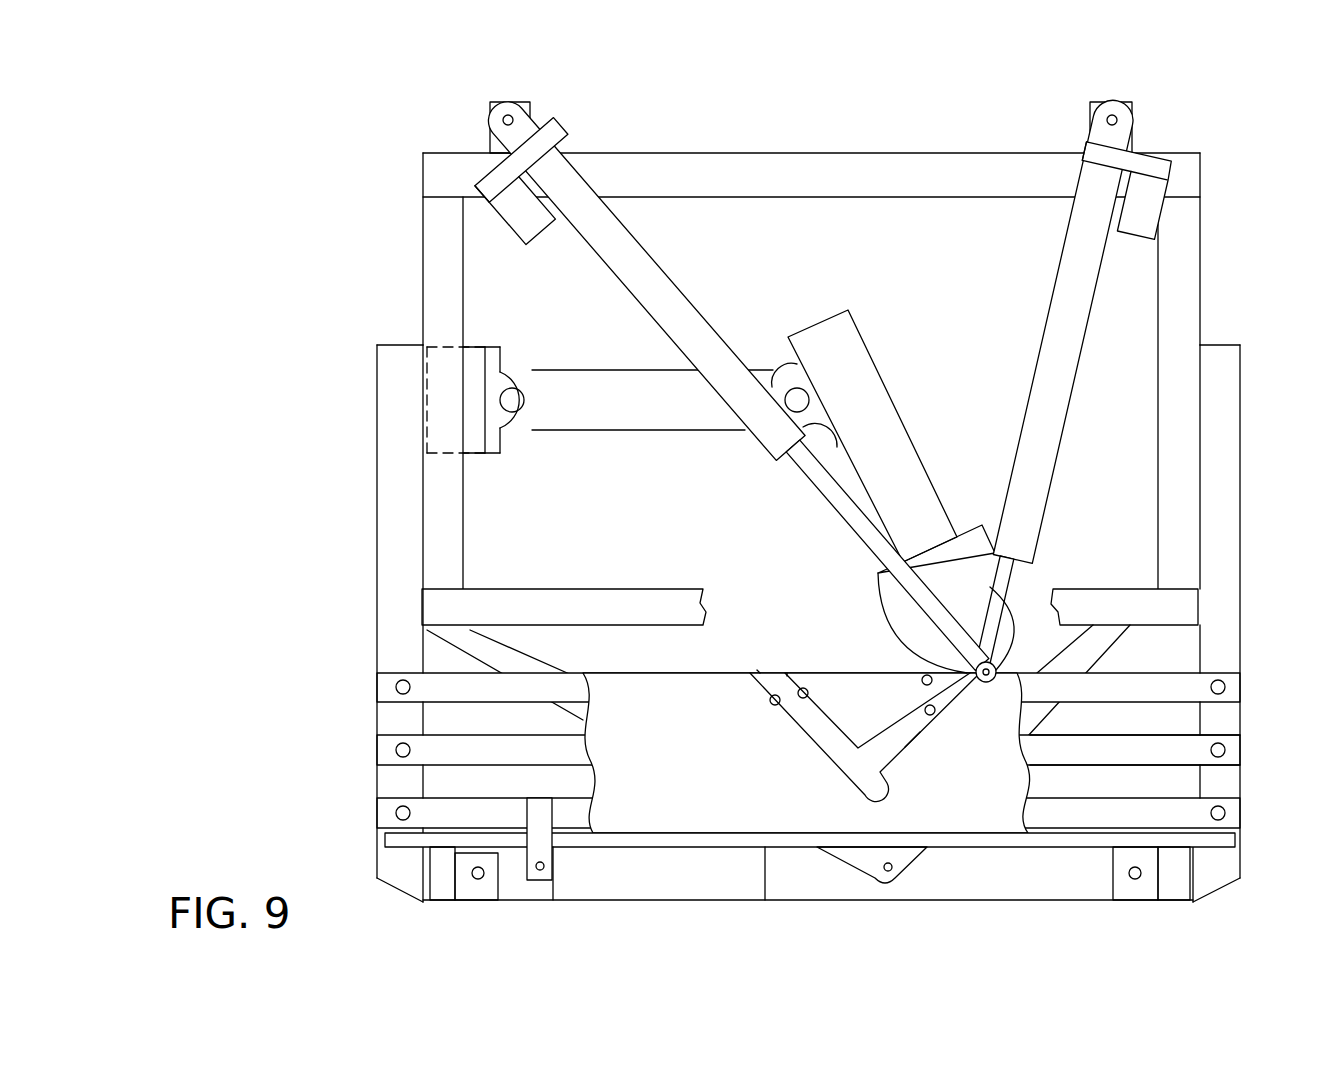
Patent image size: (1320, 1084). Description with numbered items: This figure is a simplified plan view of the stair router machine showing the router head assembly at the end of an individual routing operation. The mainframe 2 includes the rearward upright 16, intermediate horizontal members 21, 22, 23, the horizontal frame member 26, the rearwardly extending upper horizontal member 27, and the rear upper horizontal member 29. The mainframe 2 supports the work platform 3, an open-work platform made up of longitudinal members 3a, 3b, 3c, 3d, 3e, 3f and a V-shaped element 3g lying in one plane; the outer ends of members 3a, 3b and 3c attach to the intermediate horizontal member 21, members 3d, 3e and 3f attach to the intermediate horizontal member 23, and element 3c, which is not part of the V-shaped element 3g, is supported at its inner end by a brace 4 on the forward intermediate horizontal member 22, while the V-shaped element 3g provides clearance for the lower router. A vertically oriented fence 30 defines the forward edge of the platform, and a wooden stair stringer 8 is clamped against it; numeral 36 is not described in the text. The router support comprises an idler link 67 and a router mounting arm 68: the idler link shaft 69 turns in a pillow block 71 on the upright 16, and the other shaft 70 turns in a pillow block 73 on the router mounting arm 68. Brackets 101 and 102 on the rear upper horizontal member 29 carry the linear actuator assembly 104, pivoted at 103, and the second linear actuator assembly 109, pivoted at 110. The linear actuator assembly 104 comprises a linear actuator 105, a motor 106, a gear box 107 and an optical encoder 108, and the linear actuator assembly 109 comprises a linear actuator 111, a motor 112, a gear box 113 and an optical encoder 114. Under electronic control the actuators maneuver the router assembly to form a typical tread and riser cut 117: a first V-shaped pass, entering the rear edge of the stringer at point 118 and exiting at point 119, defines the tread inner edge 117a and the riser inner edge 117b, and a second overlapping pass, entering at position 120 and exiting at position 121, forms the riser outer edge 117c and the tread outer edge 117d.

The mainframe 2 is at (1205, 262).
The work platform 3 is at (1197, 680).
The longitudinal member 3a is at (453, 695).
The longitudinal member 3b is at (453, 757).
The longitudinal member 3c is at (525, 815).
The longitudinal member 3d is at (1135, 690).
The longitudinal member 3e is at (1120, 757).
The longitudinal member 3f is at (1073, 817).
The V-shaped element 3g is at (515, 659).
The brace 4 is at (545, 853).
The stair stringer 8 is at (636, 734).
The rearward upright 16 is at (471, 347).
The intermediate horizontal member 21 is at (386, 461).
The intermediate horizontal member 22 is at (1003, 893).
The intermediate horizontal member 23 is at (1240, 462).
The horizontal frame member 26 is at (553, 600).
The upper horizontal member 27 is at (449, 507).
The rear upper horizontal member 29 is at (800, 185).
The fence 30 is at (718, 843).
The base rail 36 is at (645, 898).
The idler link 67 is at (606, 417).
The router mounting arm 68 is at (887, 428).
The idler link shaft 69 is at (514, 412).
The shaft 70 is at (791, 445).
The pillow block 71 is at (512, 367).
The pillow block 73 is at (798, 372).
The bracket 101 is at (533, 107).
The bracket 102 is at (1134, 107).
The pivot 103 is at (503, 117).
The linear actuator assembly 104 is at (657, 250).
The linear actuator 105 is at (661, 283).
The motor 106 is at (517, 220).
The gear box 107 is at (530, 150).
The optical encoder 108 is at (497, 175).
The linear actuator assembly 109 is at (1058, 290).
The pivot 110 is at (1108, 117).
The linear actuator 111 is at (1072, 375).
The motor 112 is at (1147, 210).
The gear box 113 is at (1093, 152).
The optical encoder 114 is at (1163, 172).
The tread and riser cut 117 is at (805, 732).
The tread inner edge 117a is at (810, 697).
The riser inner edge 117b is at (900, 746).
The riser outer edge 117c is at (935, 714).
The tread outer edge 117d is at (772, 705).
The entry point 118 is at (787, 673).
The exit point 119 is at (922, 678).
The entry position 120 is at (990, 605).
The exit position 121 is at (757, 670).